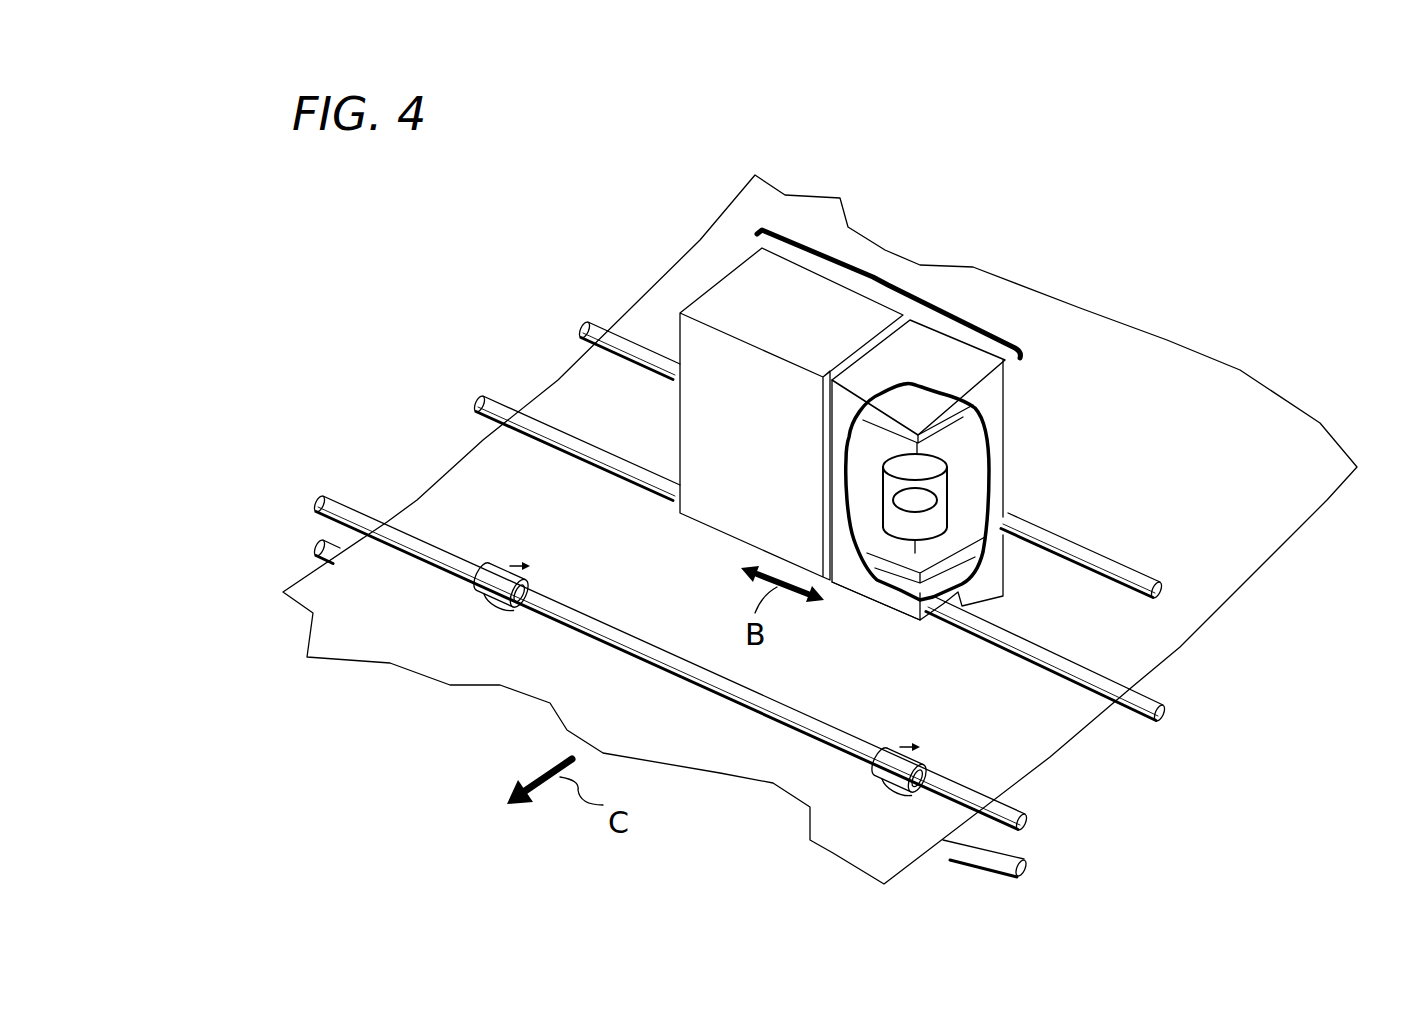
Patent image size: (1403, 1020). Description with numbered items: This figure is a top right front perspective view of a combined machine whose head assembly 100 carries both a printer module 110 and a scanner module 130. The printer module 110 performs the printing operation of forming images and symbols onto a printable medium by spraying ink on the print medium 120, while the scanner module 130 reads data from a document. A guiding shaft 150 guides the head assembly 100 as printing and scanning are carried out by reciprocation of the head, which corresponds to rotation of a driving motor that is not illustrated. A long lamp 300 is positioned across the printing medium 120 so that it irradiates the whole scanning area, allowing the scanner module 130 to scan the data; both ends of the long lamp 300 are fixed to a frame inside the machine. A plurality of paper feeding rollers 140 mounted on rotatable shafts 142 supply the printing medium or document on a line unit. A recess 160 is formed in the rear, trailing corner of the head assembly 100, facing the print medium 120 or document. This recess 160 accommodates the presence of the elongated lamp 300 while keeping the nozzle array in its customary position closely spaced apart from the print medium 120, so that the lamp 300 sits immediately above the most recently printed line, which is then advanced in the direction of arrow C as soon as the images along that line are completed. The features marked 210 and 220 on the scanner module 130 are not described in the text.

The head assembly 100 is at (886, 279).
The printer module 110 is at (733, 293).
The print medium 120 is at (1233, 377).
The scanner module 130 is at (935, 343).
The paper feeding rollers 140 is at (917, 762).
The rotatable shafts 142 is at (1023, 852).
The guiding shaft 150 is at (1120, 573).
The recess 160 is at (873, 620).
The cutaway opening 210 is at (975, 425).
The cylindrical member 220 is at (938, 487).
The long lamp 300 is at (1080, 672).